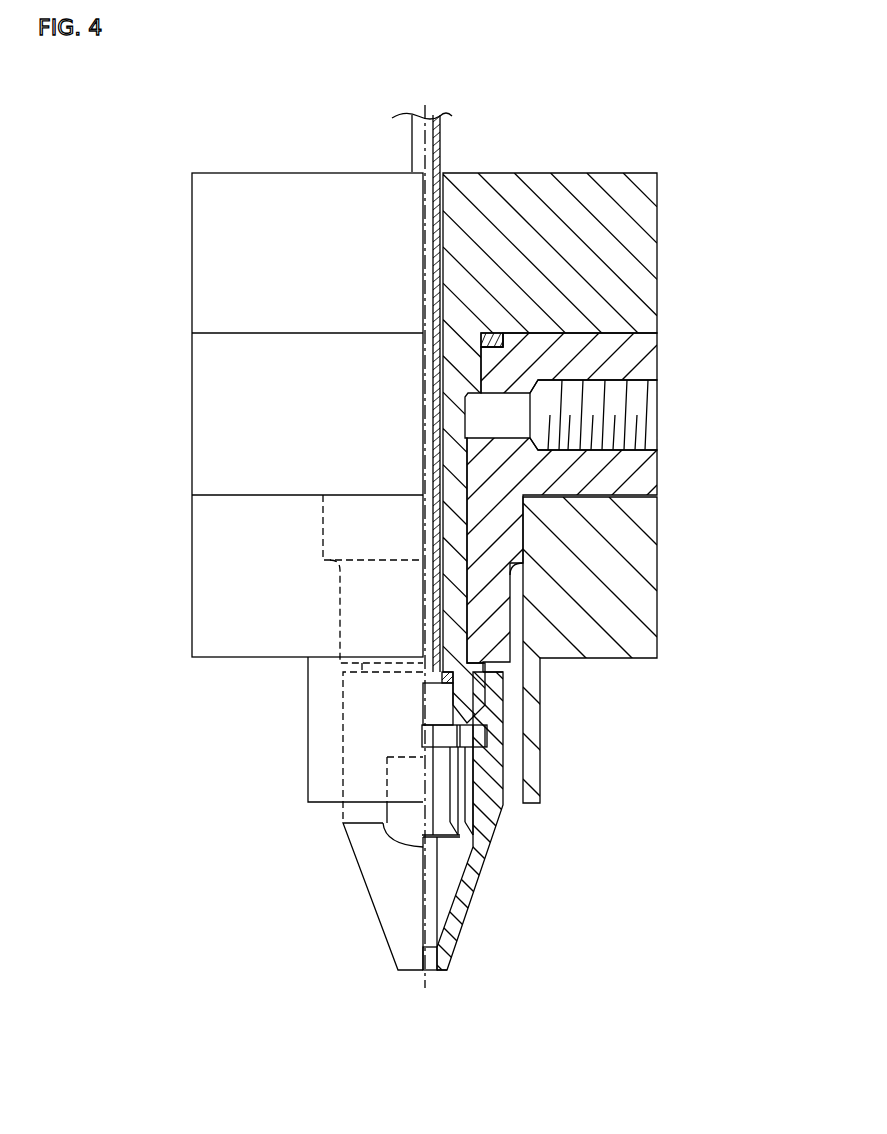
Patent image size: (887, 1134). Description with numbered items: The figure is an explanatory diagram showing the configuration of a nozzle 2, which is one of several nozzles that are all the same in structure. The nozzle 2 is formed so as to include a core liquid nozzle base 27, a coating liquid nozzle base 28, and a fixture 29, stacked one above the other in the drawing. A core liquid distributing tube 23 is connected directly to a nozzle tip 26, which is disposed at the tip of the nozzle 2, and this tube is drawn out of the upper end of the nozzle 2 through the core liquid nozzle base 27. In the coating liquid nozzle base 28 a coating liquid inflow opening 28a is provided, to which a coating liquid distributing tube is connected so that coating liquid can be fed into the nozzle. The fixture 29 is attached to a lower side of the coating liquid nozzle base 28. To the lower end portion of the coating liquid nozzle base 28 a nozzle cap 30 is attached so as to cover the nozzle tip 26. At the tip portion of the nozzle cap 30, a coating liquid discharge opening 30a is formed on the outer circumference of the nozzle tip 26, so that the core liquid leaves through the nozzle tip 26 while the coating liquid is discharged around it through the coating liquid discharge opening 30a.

The nozzle 2 is at (699, 636).
The core liquid distributing tube 23 is at (418, 138).
The nozzle tip 26 is at (437, 895).
The core liquid nozzle base 27 is at (648, 260).
The coating liquid nozzle base 28 is at (637, 475).
The coating liquid inflow opening 28a is at (637, 407).
The fixture 29 is at (630, 645).
The nozzle cap 30 is at (485, 852).
The coating liquid discharge opening 30a is at (440, 975).